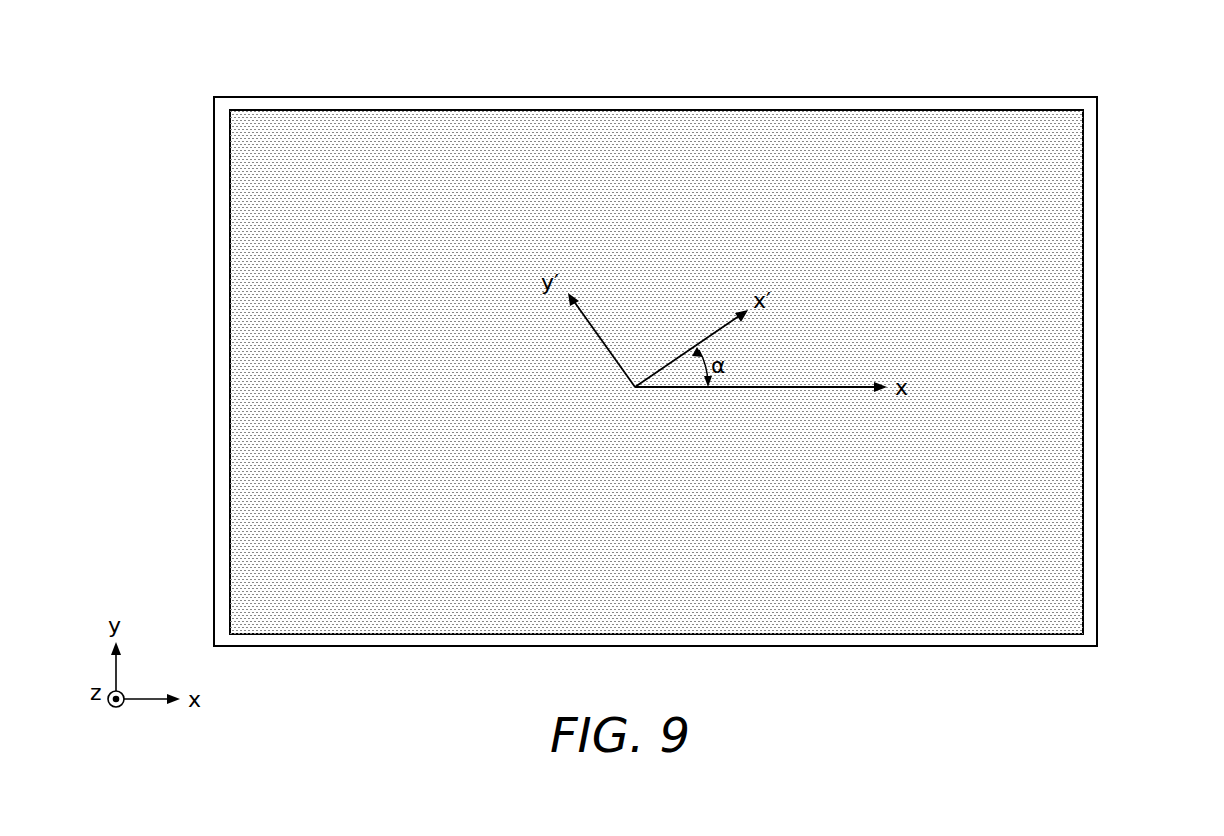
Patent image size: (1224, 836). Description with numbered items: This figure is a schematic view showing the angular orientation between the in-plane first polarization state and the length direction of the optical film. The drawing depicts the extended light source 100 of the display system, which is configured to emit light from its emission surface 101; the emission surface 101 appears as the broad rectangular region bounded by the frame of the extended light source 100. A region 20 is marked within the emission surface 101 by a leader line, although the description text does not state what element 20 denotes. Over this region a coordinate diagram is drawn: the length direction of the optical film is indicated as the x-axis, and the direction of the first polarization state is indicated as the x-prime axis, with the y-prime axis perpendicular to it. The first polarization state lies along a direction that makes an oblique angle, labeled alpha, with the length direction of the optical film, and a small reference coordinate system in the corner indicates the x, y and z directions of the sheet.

The display region 20 is at (985, 126).
The emission surface 101 is at (1087, 200).
The extended light source 100 is at (1095, 409).